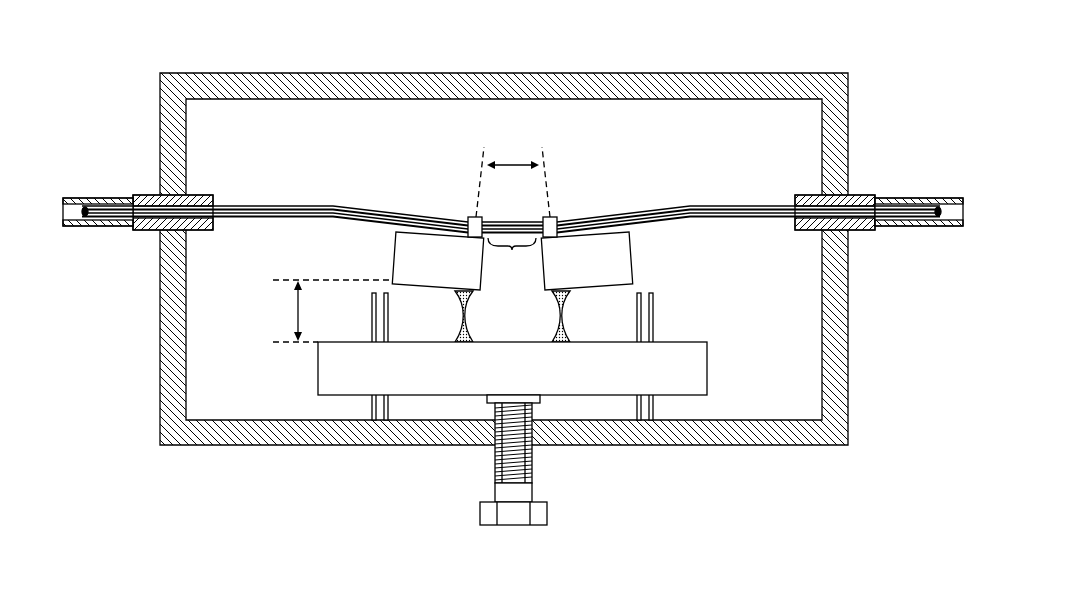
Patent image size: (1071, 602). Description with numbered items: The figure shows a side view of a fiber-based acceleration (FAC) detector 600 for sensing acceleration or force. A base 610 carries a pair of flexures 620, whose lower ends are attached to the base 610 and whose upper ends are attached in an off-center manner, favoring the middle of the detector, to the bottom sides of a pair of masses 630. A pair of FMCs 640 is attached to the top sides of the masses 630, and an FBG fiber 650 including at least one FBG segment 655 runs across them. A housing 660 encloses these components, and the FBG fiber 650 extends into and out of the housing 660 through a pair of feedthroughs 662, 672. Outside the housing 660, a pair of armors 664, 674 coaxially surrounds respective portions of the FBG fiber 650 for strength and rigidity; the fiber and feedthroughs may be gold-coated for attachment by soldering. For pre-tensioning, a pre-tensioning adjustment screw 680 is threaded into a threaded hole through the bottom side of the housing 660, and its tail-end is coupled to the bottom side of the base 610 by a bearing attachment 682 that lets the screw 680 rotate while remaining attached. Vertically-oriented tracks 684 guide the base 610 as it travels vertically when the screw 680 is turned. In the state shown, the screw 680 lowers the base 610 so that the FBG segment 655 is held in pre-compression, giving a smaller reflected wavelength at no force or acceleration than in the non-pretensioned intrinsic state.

The fiber-based acceleration (FAC) detector 600 is at (584, 44).
The base 610 is at (512, 368).
The flexures 620 is at (458, 296).
The masses 630 is at (395, 260).
The FMCs 640 is at (476, 215).
The FBG fiber 650 is at (686, 206).
The FBG segment 655 is at (512, 255).
The housing 660 is at (355, 73).
The feedthrough 662 is at (855, 195).
The armor 664 is at (943, 227).
The feedthrough 672 is at (147, 195).
The armor 674 is at (77, 226).
The pre-tensioning adjustment screw 680 is at (533, 458).
The bearing attachment 682 is at (487, 398).
The tracks 684 is at (372, 403).